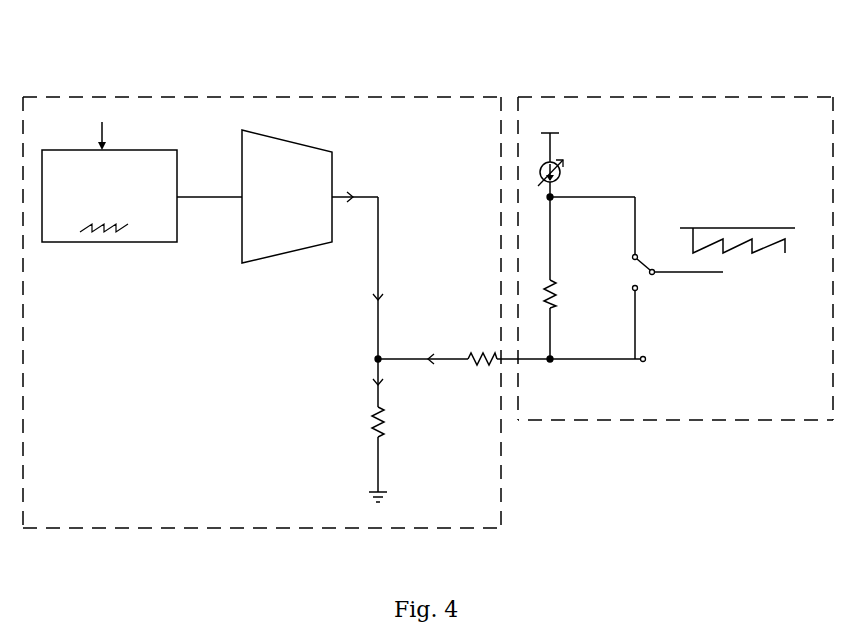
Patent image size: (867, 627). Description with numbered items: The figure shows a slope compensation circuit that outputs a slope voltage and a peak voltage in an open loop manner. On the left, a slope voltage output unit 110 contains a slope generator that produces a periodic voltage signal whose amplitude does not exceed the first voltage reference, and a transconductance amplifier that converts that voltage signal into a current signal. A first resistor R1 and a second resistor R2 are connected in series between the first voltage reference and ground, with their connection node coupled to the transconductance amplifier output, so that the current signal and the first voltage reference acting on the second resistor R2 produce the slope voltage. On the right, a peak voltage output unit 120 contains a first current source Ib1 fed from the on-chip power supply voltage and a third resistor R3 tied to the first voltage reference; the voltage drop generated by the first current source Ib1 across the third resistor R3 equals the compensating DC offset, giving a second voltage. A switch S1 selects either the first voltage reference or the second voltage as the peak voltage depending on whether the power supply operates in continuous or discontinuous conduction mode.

The slope voltage output unit 110 is at (358, 97).
The peak voltage output unit 120 is at (738, 97).
The first resistor R1 is at (482, 372).
The second resistor R2 is at (361, 422).
The third resistor R3 is at (530, 294).
The switch S1 is at (652, 279).
The first current source Ib1 is at (574, 172).